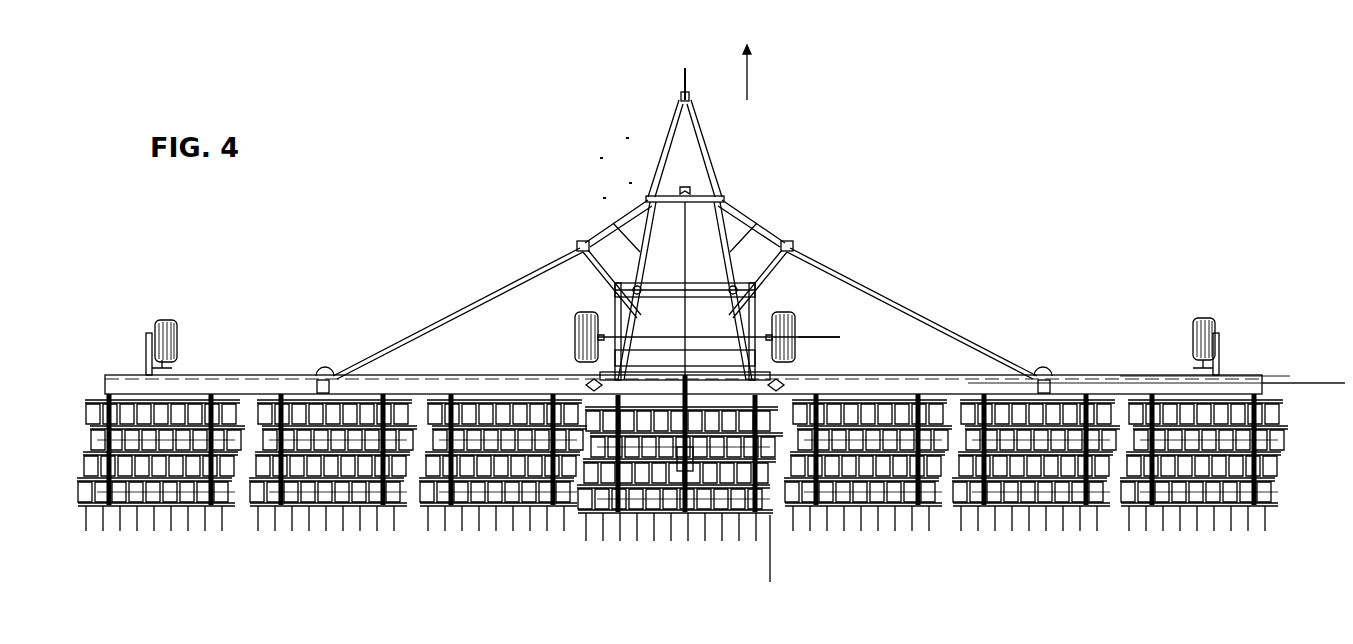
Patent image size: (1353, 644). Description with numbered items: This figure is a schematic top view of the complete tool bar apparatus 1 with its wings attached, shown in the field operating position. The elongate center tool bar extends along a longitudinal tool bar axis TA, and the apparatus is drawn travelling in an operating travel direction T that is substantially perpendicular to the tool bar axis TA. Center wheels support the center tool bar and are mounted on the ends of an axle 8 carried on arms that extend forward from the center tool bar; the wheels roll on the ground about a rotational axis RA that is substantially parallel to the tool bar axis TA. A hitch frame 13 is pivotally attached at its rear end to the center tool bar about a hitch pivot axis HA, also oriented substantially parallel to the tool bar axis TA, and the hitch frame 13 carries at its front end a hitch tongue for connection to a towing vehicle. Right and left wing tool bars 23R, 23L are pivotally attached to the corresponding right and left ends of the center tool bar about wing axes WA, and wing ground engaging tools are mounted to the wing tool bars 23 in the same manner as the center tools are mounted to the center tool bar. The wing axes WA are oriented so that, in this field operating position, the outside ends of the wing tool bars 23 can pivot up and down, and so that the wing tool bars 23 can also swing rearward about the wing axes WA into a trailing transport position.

The tool bar apparatus 1 is at (882, 172).
The axle 8 is at (572, 248).
The hitch frame 13 is at (702, 149).
The left wing tool bar 23L is at (246, 372).
The right wing tool bar 23R is at (1036, 462).
The wing tool bars 23 is at (1108, 372).
The operating travel direction T is at (753, 59).
The rotational axis RA is at (818, 337).
The hitch pivot axis HA is at (1270, 372).
The tool bar axis TA is at (1322, 383).
The wing axes WA is at (796, 553).